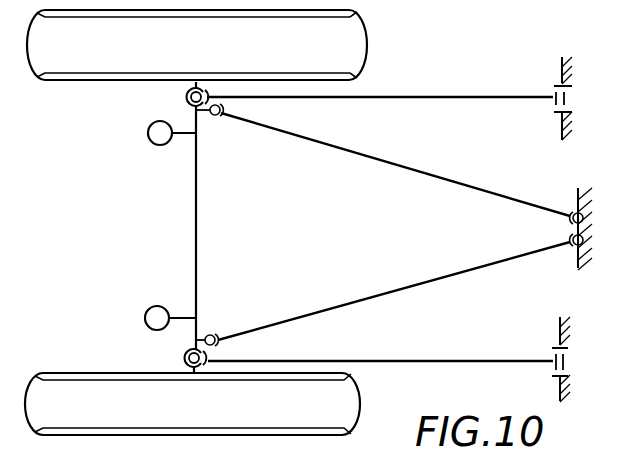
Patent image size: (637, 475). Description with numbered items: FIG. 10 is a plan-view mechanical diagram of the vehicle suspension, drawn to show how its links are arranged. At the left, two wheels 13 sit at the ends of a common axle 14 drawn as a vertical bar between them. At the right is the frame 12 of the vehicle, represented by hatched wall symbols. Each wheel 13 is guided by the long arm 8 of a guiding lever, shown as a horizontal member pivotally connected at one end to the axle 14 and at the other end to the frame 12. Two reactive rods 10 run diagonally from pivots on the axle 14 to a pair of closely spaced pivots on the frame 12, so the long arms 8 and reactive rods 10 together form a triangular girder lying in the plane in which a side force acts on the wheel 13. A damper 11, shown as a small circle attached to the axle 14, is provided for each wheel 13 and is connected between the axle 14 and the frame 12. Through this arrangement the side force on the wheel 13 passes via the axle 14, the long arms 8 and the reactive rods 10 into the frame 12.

The long arm 8 is at (472, 97).
The reactive rod 10 is at (491, 199).
The damper 11 is at (147, 141).
The frame 12 is at (573, 128).
The wheel 13 is at (368, 30).
The axle 14 is at (192, 200).